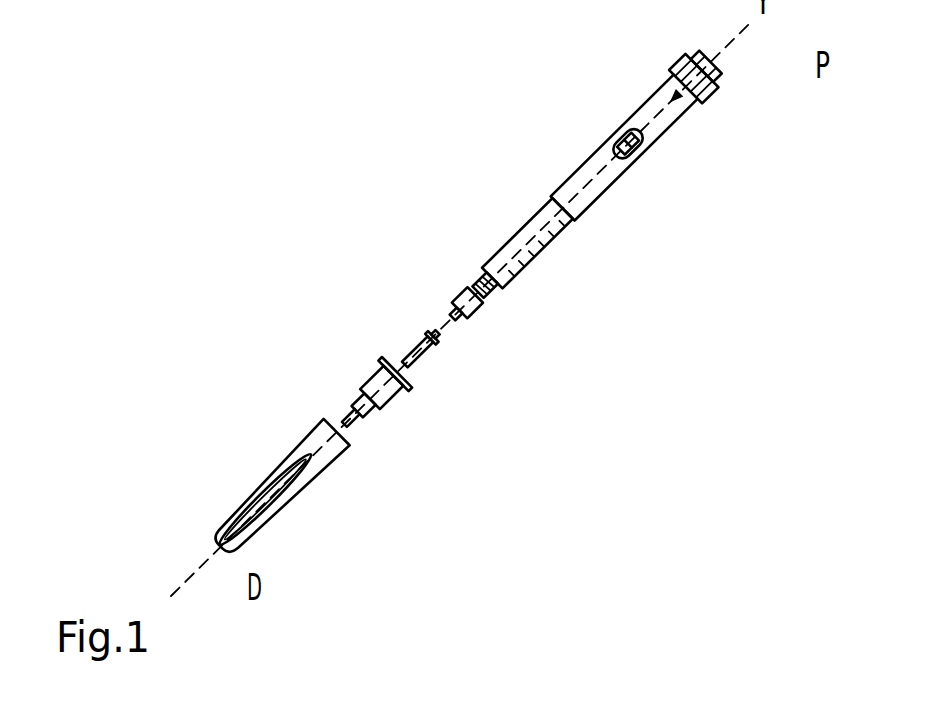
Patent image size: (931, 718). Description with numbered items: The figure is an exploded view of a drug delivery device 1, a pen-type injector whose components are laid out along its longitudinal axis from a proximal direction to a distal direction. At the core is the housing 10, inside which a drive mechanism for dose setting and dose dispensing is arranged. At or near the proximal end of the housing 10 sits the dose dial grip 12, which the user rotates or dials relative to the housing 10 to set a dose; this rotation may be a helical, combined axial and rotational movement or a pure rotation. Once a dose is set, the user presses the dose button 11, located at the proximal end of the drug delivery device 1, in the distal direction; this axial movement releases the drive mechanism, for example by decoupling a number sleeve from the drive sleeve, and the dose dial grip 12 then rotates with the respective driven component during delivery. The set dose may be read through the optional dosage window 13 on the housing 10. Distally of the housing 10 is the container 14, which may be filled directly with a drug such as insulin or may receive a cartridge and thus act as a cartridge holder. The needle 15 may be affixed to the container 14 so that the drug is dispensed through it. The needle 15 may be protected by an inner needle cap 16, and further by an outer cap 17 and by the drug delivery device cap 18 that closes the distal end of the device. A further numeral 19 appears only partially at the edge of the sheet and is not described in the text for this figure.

The drug delivery device 1 is at (524, 181).
The housing 10 is at (590, 178).
The dose button 11 is at (708, 68).
The dose dial grip 12 is at (660, 63).
The dosage window 13 is at (637, 132).
The container 14 is at (525, 235).
The needle 15 is at (463, 299).
The inner needle cap 16 is at (418, 347).
The outer cap 17 is at (377, 379).
The drug delivery device cap 18 is at (317, 443).
The needle assembly 19 is at (917, 708).